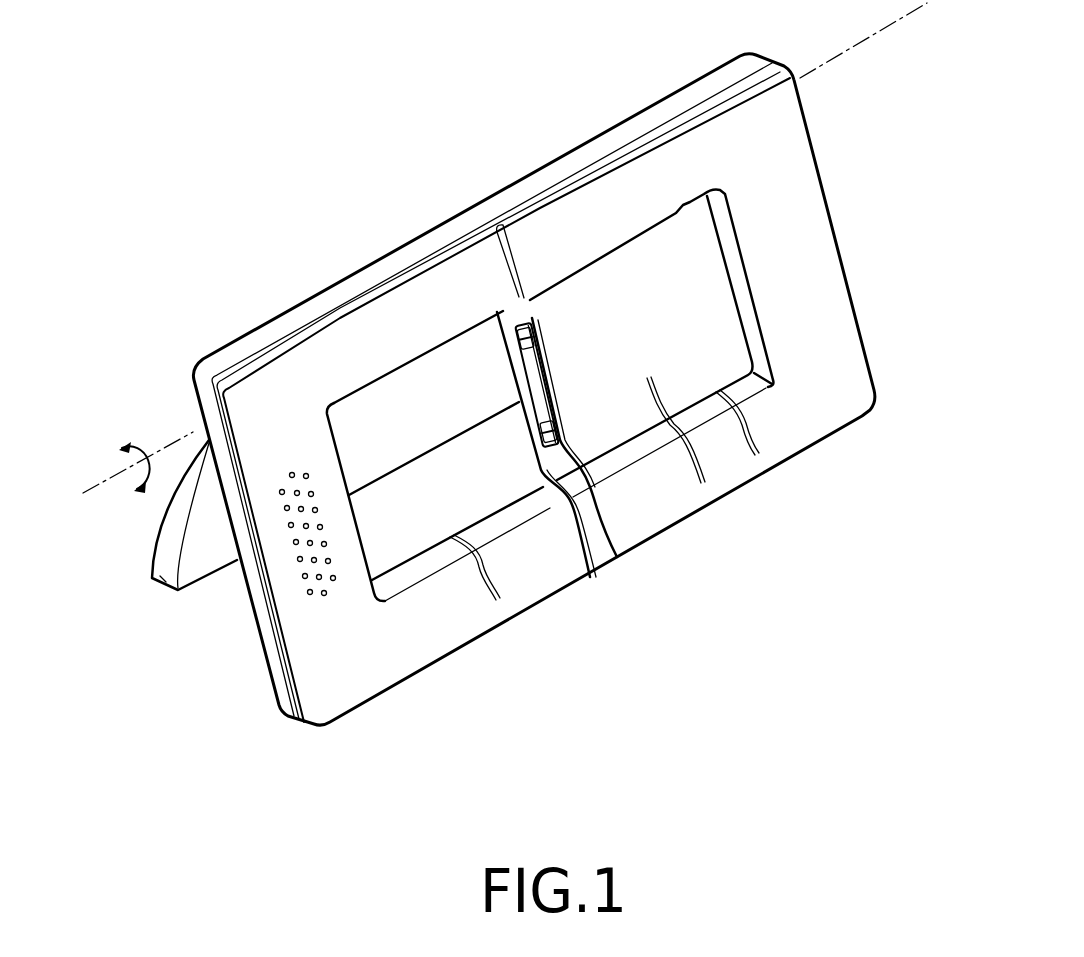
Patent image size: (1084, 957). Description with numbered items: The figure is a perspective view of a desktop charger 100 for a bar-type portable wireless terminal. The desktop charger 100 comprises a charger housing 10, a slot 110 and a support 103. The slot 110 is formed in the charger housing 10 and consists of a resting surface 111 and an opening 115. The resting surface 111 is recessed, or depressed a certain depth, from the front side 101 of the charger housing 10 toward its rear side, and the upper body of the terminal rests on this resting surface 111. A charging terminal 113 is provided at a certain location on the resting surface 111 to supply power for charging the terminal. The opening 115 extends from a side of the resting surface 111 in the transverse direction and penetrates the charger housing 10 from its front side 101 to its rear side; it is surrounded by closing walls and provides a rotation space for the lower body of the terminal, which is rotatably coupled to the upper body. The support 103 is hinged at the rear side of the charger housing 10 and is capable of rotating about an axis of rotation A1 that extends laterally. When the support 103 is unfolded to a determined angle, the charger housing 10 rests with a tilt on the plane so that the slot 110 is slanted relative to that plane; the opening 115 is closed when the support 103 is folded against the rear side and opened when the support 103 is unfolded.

The desktop charger 100 is at (178, 158).
The charger housing 10 is at (333, 275).
The front side 101 is at (613, 190).
The support 103 is at (168, 578).
The slot 110 is at (700, 297).
The resting surface 111 is at (690, 338).
The charging terminal 113 is at (525, 333).
The opening 115 is at (397, 530).
The axis of rotation A1 is at (103, 480).